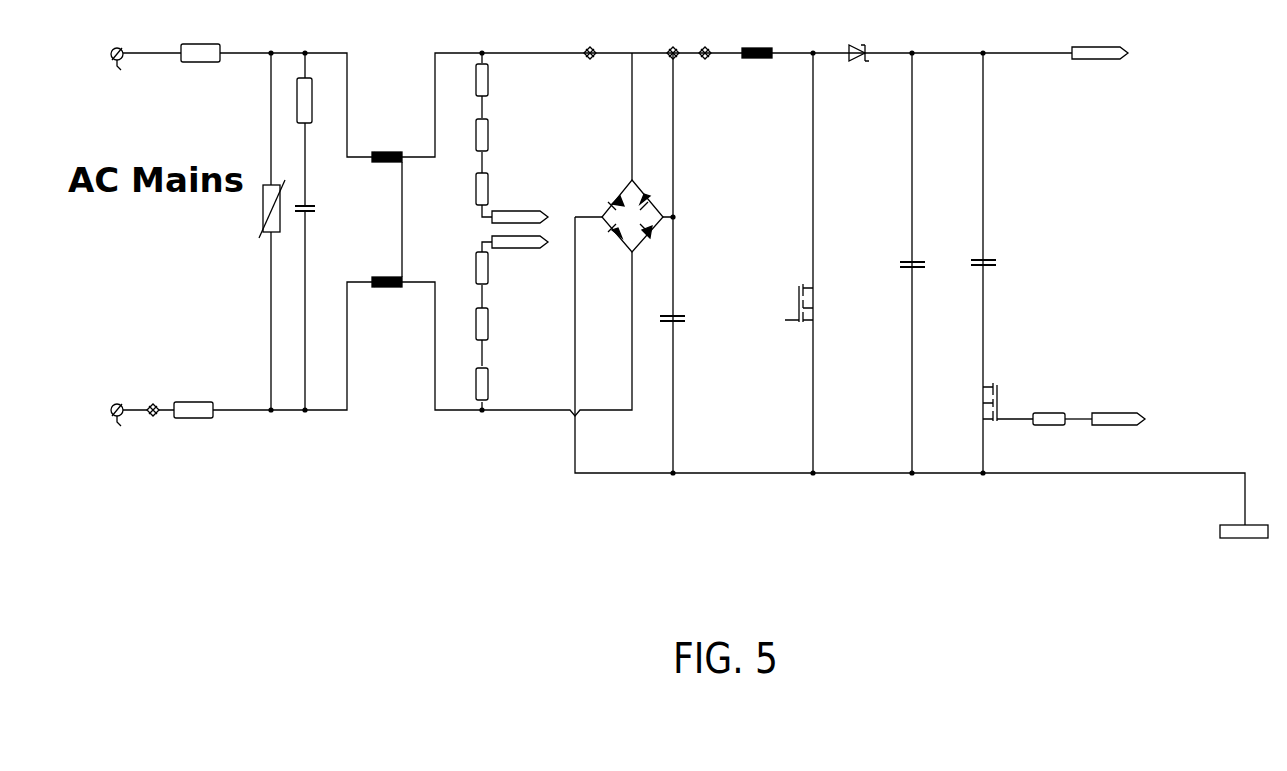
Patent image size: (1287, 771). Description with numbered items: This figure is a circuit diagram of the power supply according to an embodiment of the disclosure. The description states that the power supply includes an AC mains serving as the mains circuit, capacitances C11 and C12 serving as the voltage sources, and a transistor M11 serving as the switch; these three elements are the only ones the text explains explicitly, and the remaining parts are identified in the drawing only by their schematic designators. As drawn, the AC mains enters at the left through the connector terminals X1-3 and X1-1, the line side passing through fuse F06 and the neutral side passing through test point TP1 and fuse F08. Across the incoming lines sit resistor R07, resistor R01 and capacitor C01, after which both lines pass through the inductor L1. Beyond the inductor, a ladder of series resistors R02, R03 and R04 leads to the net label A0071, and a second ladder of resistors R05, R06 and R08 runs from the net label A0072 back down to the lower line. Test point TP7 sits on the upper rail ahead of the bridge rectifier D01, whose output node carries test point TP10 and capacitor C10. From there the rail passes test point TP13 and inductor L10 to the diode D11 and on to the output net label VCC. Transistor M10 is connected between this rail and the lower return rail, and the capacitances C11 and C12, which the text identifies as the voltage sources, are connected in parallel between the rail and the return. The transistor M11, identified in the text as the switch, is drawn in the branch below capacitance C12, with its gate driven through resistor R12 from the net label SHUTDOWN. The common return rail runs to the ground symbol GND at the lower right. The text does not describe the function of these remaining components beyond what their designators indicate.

The AC line connector terminal X1-3 is at (115, 54).
The fuse F06 is at (200, 59).
The resistor R07 is at (311, 231).
The varistor R01 is at (268, 231).
The capacitor C01 is at (316, 210).
The common-mode choke L1 is at (387, 224).
The AC neutral connector terminal X1-1 is at (115, 410).
The test point TP1 is at (153, 403).
The fuse F08 is at (193, 404).
The resistor R02 is at (478, 85).
The resistor R03 is at (478, 146).
The resistor R04 is at (480, 195).
The net label A0071 is at (520, 217).
The net label A0072 is at (515, 244).
The resistor R05 is at (478, 280).
The resistor R06 is at (478, 337).
The resistor R08 is at (478, 389).
The test point TP7 is at (590, 46).
The test point TP10 is at (669, 46).
The test point TP13 is at (702, 46).
The inductor L10 is at (756, 56).
The zener diode D11 is at (858, 61).
The supply voltage net label VCC is at (1100, 53).
The bridge rectifier D01 is at (624, 216).
The capacitor C10 is at (666, 313).
The MOSFET M10 is at (794, 303).
The capacitance C11 is at (902, 256).
The capacitance C12 is at (973, 255).
The transistor M11 is at (1008, 402).
The resistor R12 is at (1062, 427).
The shutdown net label SHUTDOWN is at (1118, 419).
The ground GND is at (1244, 531).